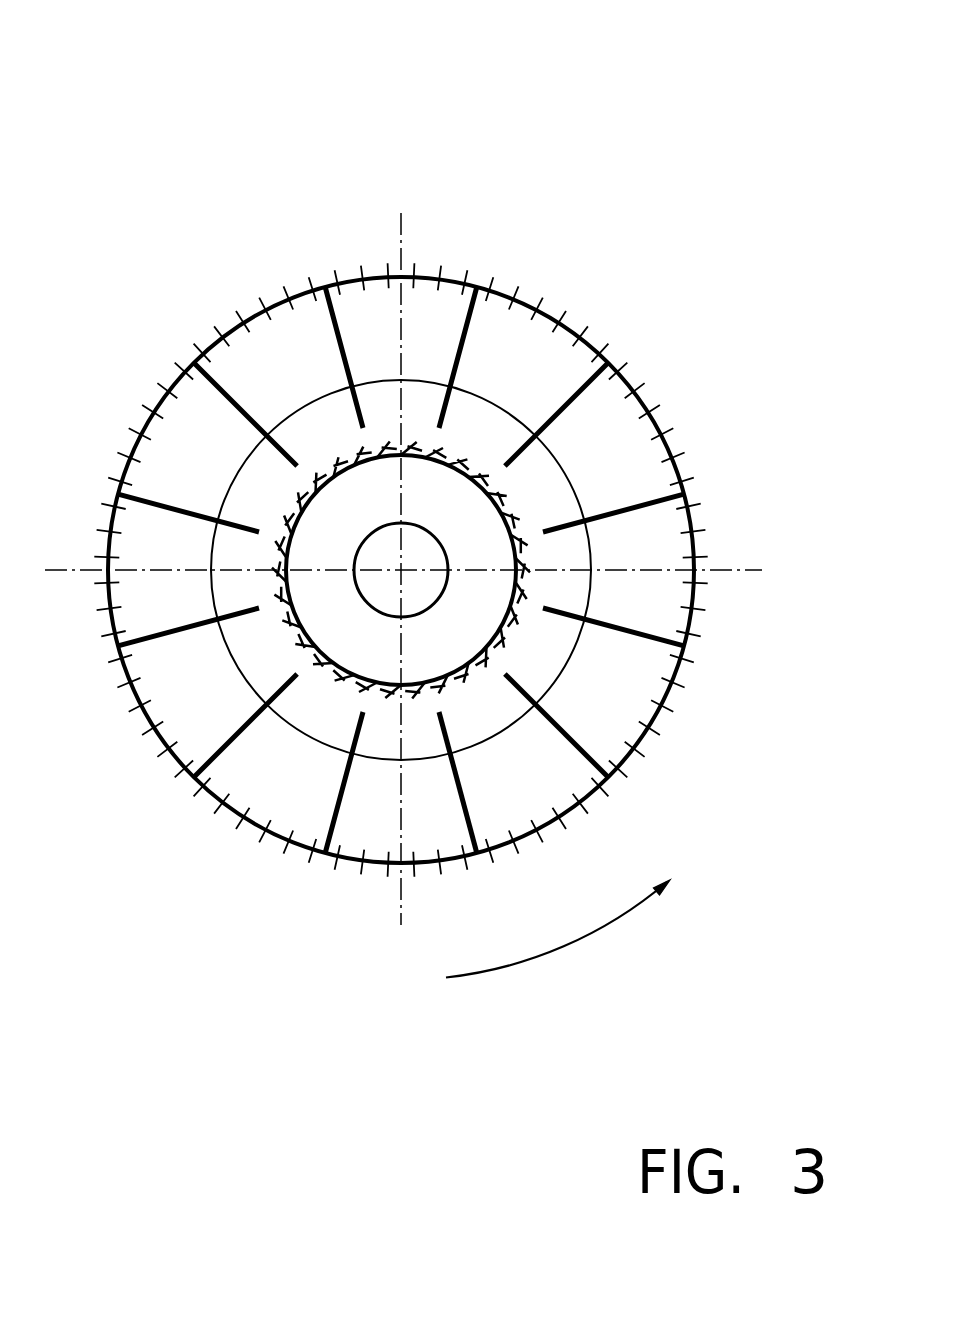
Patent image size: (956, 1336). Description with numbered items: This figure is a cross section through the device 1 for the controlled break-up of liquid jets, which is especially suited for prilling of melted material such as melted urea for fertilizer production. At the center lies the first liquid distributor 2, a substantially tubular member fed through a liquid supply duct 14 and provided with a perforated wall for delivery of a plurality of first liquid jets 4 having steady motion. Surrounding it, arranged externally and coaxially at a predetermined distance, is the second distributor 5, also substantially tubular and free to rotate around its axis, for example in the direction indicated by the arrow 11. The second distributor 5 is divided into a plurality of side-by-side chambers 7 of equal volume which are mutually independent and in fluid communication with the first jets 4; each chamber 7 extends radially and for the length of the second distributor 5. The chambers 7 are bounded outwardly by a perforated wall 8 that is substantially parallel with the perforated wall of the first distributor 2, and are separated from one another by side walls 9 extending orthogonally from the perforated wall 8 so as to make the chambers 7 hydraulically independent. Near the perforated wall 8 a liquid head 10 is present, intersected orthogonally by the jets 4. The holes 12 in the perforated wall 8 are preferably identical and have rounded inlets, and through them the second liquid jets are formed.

The device for the controlled break-up of liquid jets 1 is at (782, 131).
The first liquid distributor 2 is at (311, 497).
The first liquid jets 4 is at (300, 610).
The second distributor 5 is at (195, 777).
The chambers 7 is at (436, 828).
The perforated wall 8 is at (700, 592).
The side walls 9 is at (573, 745).
The liquid head 10 is at (583, 680).
The arrow 11 is at (583, 938).
The holes 12 is at (658, 430).
The liquid supply duct 14 is at (371, 544).